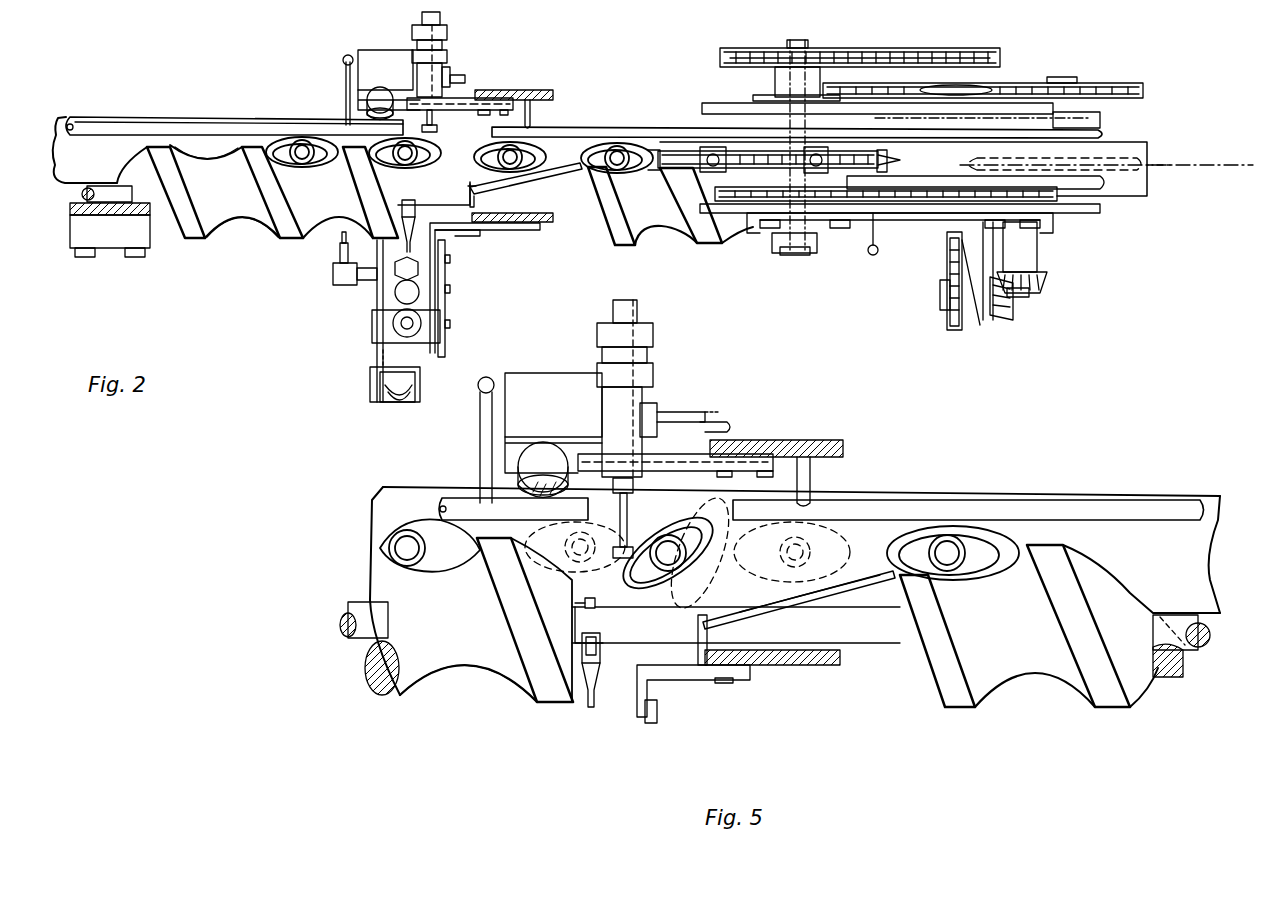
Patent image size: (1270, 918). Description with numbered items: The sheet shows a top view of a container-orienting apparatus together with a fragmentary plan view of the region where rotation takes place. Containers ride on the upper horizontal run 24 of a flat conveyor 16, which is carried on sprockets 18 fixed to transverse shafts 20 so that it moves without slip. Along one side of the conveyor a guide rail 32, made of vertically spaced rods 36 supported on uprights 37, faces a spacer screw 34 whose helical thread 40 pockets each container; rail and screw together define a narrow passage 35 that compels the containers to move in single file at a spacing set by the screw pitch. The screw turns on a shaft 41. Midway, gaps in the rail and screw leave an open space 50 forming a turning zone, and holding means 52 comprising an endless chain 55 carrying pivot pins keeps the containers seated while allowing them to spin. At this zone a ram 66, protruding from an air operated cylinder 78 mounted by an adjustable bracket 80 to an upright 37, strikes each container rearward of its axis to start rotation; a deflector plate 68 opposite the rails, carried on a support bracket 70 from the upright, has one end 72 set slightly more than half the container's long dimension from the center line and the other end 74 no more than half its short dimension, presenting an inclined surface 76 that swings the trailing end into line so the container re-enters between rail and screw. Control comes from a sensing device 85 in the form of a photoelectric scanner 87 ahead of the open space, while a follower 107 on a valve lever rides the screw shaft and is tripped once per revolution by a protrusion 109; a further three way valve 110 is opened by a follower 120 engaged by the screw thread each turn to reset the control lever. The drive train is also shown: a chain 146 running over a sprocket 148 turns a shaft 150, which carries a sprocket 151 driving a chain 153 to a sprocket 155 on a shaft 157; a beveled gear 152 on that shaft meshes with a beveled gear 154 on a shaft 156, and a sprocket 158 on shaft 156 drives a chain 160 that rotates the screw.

In FIG. 2, the conveyor 16 is at (1157, 152).
In FIG. 5, the conveyor 16 is at (985, 497).
In FIG. 2, the sprocket 18 is at (1170, 165).
In FIG. 2, the shaft 20 is at (1063, 77).
In FIG. 2, the upper horizontal run 24 is at (105, 138).
In FIG. 5, the upper horizontal run 24 is at (1215, 567).
In FIG. 2, the guide rail 32 is at (257, 120).
In FIG. 5, the guide rail 32 is at (455, 497).
In FIG. 2, the spacer screw 34 is at (194, 242).
In FIG. 5, the spacer screw 34 is at (368, 680).
In FIG. 2, the passage 35 is at (200, 147).
In FIG. 2, the rod 36 is at (618, 130).
In FIG. 2, the upright 37 is at (72, 212).
In FIG. 5, the upright 37 is at (828, 440).
In FIG. 2, the helical thread 40 is at (262, 222).
In FIG. 5, the helical thread 40 is at (468, 672).
In FIG. 2, the shaft 41 is at (82, 195).
In FIG. 5, the shaft 41 is at (348, 635).
In FIG. 2, the open space 50 is at (558, 153).
In FIG. 5, the open space 50 is at (735, 447).
In FIG. 2, the holding means 52 is at (668, 174).
In FIG. 2, the endless chain 55 is at (683, 147).
In FIG. 2, the ram 66 is at (438, 130).
In FIG. 5, the ram 66 is at (630, 502).
In FIG. 2, the deflector plate 68 is at (572, 180).
In FIG. 5, the deflector plate 68 is at (860, 588).
In FIG. 2, the bracket 70 is at (470, 229).
In FIG. 5, the bracket 70 is at (698, 682).
In FIG. 2, the end 72 is at (470, 185).
In FIG. 5, the end 72 is at (698, 622).
In FIG. 5, the end 74 is at (872, 580).
In FIG. 5, the inclined surface 76 is at (772, 605).
In FIG. 2, the air operated cylinder 78 is at (445, 60).
In FIG. 5, the air operated cylinder 78 is at (605, 413).
In FIG. 5, the bracket 80 is at (672, 457).
In FIG. 2, the sensing device 85 is at (383, 45).
In FIG. 5, the sensing device 85 is at (518, 373).
In FIG. 2, the photoelectric scanner 87 is at (368, 100).
In FIG. 5, the photoelectric scanner 87 is at (520, 460).
In FIG. 2, the follower 107 is at (418, 206).
In FIG. 5, the follower 107 is at (600, 655).
In FIG. 5, the protrusion 109 is at (600, 594).
In FIG. 2, the three way valve 110 is at (340, 287).
In FIG. 2, the follower 120 is at (342, 236).
In FIG. 2, the chain 146 is at (893, 50).
In FIG. 2, the sprocket 148 is at (730, 50).
In FIG. 2, the shaft 150 is at (795, 40).
In FIG. 2, the sprocket 151 is at (736, 215).
In FIG. 2, the beveled gear 152 is at (1043, 281).
In FIG. 2, the chain 153 is at (925, 190).
In FIG. 2, the beveled gear 154 is at (1000, 322).
In FIG. 2, the sprocket 155 is at (1065, 198).
In FIG. 2, the shaft 156 is at (1012, 306).
In FIG. 2, the shaft 157 is at (1022, 295).
In FIG. 2, the sprocket 158 is at (948, 322).
In FIG. 2, the chain 160 is at (946, 277).